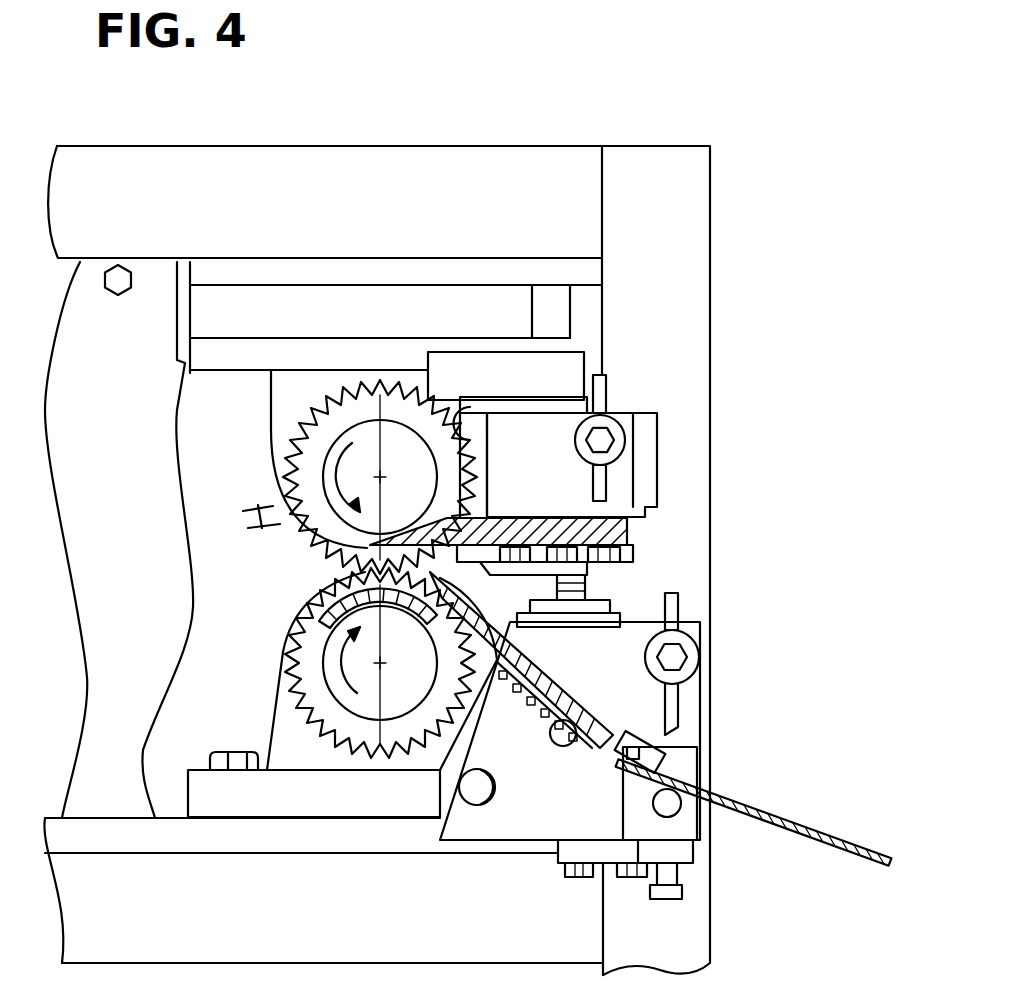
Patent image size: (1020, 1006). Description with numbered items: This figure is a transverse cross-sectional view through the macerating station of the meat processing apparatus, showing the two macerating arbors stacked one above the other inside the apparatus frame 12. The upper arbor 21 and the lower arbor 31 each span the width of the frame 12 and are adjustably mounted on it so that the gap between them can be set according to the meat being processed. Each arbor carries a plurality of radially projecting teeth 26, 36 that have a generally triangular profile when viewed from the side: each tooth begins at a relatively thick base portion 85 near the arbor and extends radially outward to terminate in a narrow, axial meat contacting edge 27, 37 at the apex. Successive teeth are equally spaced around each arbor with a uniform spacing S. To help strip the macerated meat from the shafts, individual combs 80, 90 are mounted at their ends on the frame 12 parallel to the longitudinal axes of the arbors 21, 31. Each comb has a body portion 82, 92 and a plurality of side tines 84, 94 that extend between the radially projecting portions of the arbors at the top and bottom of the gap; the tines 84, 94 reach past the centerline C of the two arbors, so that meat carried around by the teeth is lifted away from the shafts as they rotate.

The apparatus frame 12 is at (433, 214).
The arbor 21 is at (333, 408).
The teeth 26 is at (310, 433).
The meat contacting edge 27 is at (283, 480).
The spacing S is at (250, 515).
The base portion 85 is at (400, 395).
The body portion 82 is at (550, 532).
The comb 80 is at (603, 534).
The tines 84 is at (330, 547).
The tines 94 is at (300, 607).
The teeth 36 is at (303, 707).
The meat contacting edge 37 is at (293, 670).
The arbor 31 is at (338, 719).
The centerline C is at (372, 747).
The body portion 92 is at (535, 661).
The comb 90 is at (612, 718).